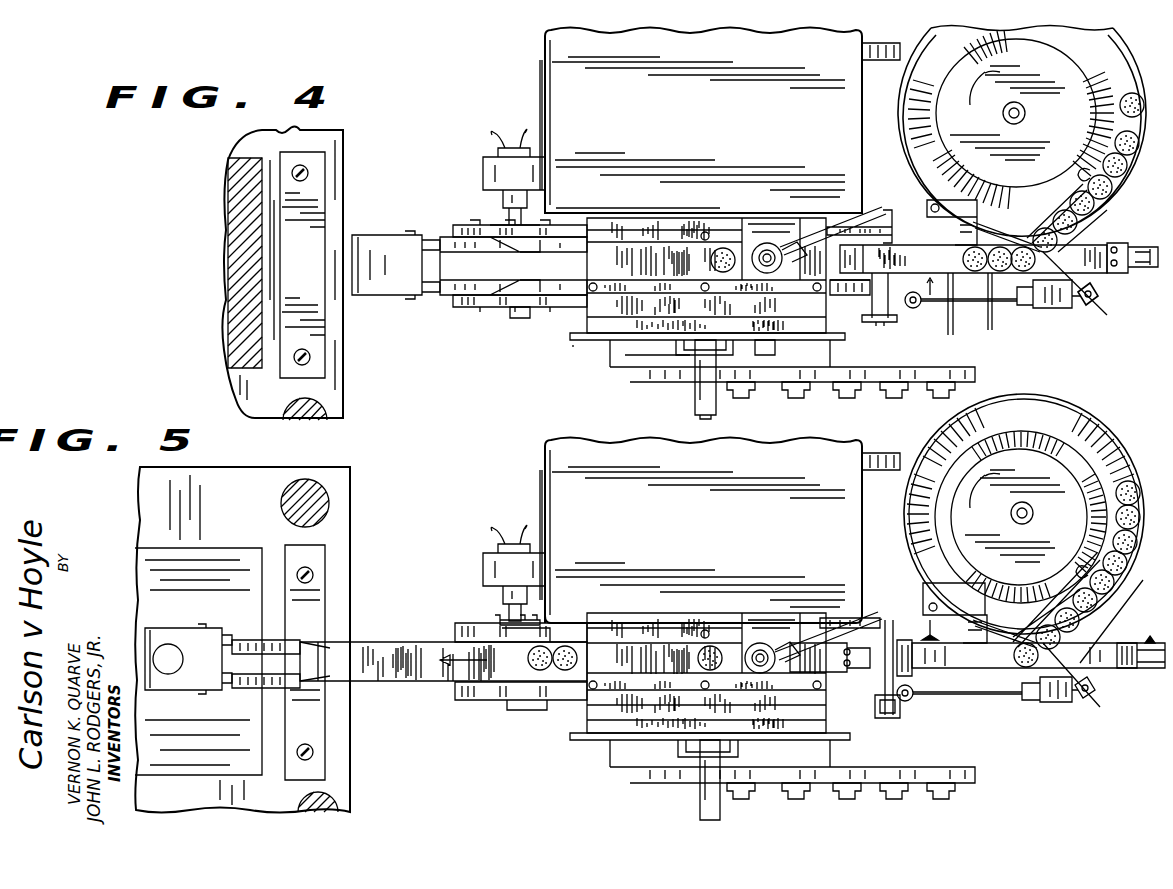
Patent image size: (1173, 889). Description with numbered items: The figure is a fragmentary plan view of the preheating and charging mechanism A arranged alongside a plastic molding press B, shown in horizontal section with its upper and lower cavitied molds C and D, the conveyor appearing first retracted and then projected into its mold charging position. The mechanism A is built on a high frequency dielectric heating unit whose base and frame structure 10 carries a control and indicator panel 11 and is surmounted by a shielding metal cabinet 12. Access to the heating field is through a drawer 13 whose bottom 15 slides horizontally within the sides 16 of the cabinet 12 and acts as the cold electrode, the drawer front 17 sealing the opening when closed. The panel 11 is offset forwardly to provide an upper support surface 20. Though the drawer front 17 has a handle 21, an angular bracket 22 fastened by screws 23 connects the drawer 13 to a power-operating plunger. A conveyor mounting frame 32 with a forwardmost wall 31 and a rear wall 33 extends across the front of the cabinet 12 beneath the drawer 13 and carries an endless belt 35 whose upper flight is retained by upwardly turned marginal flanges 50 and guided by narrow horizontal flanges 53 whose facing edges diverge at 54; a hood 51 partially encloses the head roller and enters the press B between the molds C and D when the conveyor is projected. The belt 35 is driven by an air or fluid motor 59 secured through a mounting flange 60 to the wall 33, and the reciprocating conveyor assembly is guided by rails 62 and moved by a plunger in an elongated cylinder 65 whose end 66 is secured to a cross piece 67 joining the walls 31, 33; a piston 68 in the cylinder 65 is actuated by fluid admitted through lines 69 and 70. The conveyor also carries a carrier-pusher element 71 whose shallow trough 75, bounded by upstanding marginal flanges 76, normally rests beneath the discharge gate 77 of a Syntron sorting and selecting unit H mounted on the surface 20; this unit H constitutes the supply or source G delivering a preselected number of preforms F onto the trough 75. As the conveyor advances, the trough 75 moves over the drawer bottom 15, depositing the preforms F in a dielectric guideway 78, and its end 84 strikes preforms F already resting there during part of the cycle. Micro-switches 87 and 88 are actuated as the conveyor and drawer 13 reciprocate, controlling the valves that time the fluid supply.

In FIG. 5, the base and frame structure 10 is at (612, 770).
In FIG. 4, the control and indicator panel 11 is at (840, 388).
In FIG. 5, the control and indicator panel 11 is at (792, 783).
In FIG. 4, the cabinet 12 is at (700, 110).
In FIG. 5, the cabinet 12 is at (703, 531).
In FIG. 4, the drawer 13 is at (592, 348).
In FIG. 4, the drawer bottom 15 is at (588, 305).
In FIG. 5, the drawer bottom 15 is at (590, 722).
In FIG. 4, the sides of the cabinet 16 is at (545, 68).
In FIG. 5, the sides of the cabinet 16 is at (720, 526).
In FIG. 4, the drawer front 17 is at (578, 343).
In FIG. 5, the drawer front 17 is at (578, 740).
In FIG. 4, the upper support surface 20 is at (946, 317).
In FIG. 4, the handle 21 is at (665, 355).
In FIG. 4, the angular bracket 22 is at (706, 352).
In FIG. 5, the angular bracket 22 is at (700, 795).
In FIG. 4, the screws 23 is at (700, 350).
In FIG. 5, the screws 23 is at (690, 750).
In FIG. 4, the forwardmost wall 31 is at (470, 308).
In FIG. 5, the conveyor mounting frame 32 is at (466, 623).
In FIG. 4, the rear wall 33 is at (465, 225).
In FIG. 4, the flexible belt 35 is at (588, 255).
In FIG. 5, the flexible belt 35 is at (385, 633).
In FIG. 4, the marginal flanges 50 is at (630, 195).
In FIG. 5, the marginal flanges 50 is at (418, 655).
In FIG. 4, the hood 51 is at (388, 290).
In FIG. 5, the hood 51 is at (168, 628).
In FIG. 5, the horizontal flanges 53 is at (300, 641).
In FIG. 5, the diverging edges 54 is at (300, 688).
In FIG. 4, the drive motor 59 is at (483, 165).
In FIG. 5, the drive motor 59 is at (487, 551).
In FIG. 5, the mounting flange 60 is at (502, 620).
In FIG. 4, the rails 62 is at (866, 242).
In FIG. 5, the rails 62 is at (890, 655).
In FIG. 4, the elongated cylinder 65 is at (1150, 248).
In FIG. 5, the elongated cylinder 65 is at (1122, 668).
In FIG. 4, the cylinder end 66 is at (1122, 272).
In FIG. 5, the cross piece 67 is at (888, 672).
In FIG. 5, the piston 68 is at (1120, 643).
In FIG. 5, the fluid line 69 is at (930, 620).
In FIG. 5, the fluid line 70 is at (1150, 636).
In FIG. 4, the carrier-pusher element 71 is at (930, 296).
In FIG. 5, the carrier-pusher element 71 is at (690, 655).
In FIG. 4, the trough 75 is at (920, 270).
In FIG. 5, the trough 75 is at (610, 640).
In FIG. 4, the upstanding marginal flanges 76 is at (850, 287).
In FIG. 5, the upstanding marginal flanges 76 is at (600, 660).
In FIG. 4, the discharge gate 77 is at (1005, 276).
In FIG. 5, the discharge gate 77 is at (1025, 672).
In FIG. 4, the guideway 78 is at (700, 232).
In FIG. 5, the guideway 78 is at (778, 672).
In FIG. 4, the trough end 84 is at (825, 298).
In FIG. 5, the trough end 84 is at (590, 640).
In FIG. 4, the micro-switch 87 is at (878, 328).
In FIG. 4, the micro-switch 88 is at (1080, 308).
In FIG. 5, the micro-switch 88 is at (1071, 675).
In FIG. 5, the preheating and charging mechanism A is at (522, 485).
In FIG. 4, the plastic molding press B is at (345, 180).
In FIG. 5, the plastic molding press B is at (350, 503).
In FIG. 4, the upper cavitied mold C is at (224, 318).
In FIG. 5, the lower cavitied mold D is at (140, 598).
In FIG. 4, the preforms F is at (710, 262).
In FIG. 5, the preforms F is at (570, 670).
In FIG. 4, the supply or source G is at (1118, 233).
In FIG. 4, the sorting and selecting unit H is at (1105, 68).
In FIG. 5, the sorting and selecting unit H is at (1063, 415).